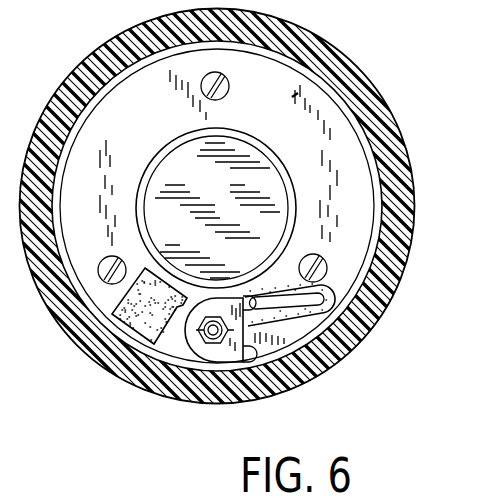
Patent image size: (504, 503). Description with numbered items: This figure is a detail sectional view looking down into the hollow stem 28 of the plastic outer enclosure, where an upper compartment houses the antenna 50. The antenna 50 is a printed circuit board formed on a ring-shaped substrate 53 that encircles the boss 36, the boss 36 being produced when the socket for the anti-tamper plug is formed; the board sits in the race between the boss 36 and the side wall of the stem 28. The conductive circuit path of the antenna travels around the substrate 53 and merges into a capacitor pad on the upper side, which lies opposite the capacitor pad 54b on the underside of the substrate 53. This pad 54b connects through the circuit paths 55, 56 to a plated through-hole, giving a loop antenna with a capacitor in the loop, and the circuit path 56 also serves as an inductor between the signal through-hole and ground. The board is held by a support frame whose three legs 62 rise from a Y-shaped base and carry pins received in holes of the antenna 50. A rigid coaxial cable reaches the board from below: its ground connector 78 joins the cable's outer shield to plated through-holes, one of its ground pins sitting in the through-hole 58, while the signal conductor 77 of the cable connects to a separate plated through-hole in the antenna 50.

The hollow stem 28 is at (100, 50).
The antenna 50 is at (292, 97).
The ring-shaped substrate 53 is at (330, 133).
The boss 36 is at (265, 227).
The legs 62 is at (103, 258).
The capacitor pad 54b is at (132, 325).
The circuit path 55 is at (175, 330).
The signal conductor 77 is at (213, 340).
The ground connector 78 is at (232, 350).
The through-hole 58 is at (288, 385).
The circuit path 56 is at (337, 362).